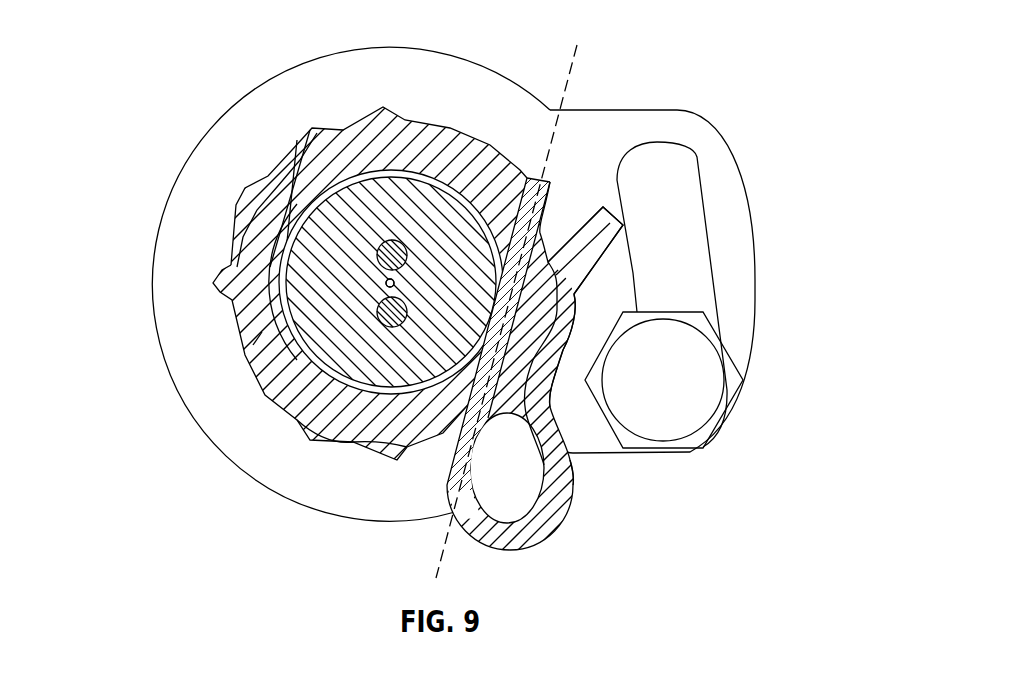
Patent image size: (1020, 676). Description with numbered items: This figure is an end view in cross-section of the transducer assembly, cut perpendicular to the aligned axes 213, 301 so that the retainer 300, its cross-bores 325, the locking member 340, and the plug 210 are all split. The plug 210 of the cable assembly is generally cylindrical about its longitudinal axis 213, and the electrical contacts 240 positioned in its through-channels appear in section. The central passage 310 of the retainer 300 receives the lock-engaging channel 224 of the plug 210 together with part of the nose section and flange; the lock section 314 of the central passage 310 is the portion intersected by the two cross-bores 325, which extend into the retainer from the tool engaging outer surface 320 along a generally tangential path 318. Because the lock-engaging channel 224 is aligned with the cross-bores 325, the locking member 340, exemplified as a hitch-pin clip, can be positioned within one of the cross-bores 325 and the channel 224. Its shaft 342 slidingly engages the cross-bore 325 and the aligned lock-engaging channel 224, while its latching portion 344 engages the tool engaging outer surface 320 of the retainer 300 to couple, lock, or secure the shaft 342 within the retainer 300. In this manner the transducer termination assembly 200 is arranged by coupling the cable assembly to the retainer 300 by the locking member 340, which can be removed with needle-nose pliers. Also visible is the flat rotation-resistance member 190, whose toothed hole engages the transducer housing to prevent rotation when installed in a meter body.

The rotation-resistance member 190 is at (172, 240).
The transducer termination assembly 200 is at (322, 96).
The plug 210 is at (412, 195).
The longitudinal axis 213 is at (386, 283).
The lock-engaging channel 224 is at (300, 405).
The electrical contact 240 is at (378, 248).
The retainer 300 is at (345, 130).
The axis 301 is at (390, 283).
The central passage 310 is at (305, 428).
The lock section 314 is at (318, 434).
The tangential path 318 is at (577, 70).
The tool engaging outer surface 320 is at (580, 320).
The cross-bore 325 is at (253, 345).
The locking member 340 is at (553, 523).
The shaft 342 is at (537, 180).
The latching portion 344 is at (553, 290).